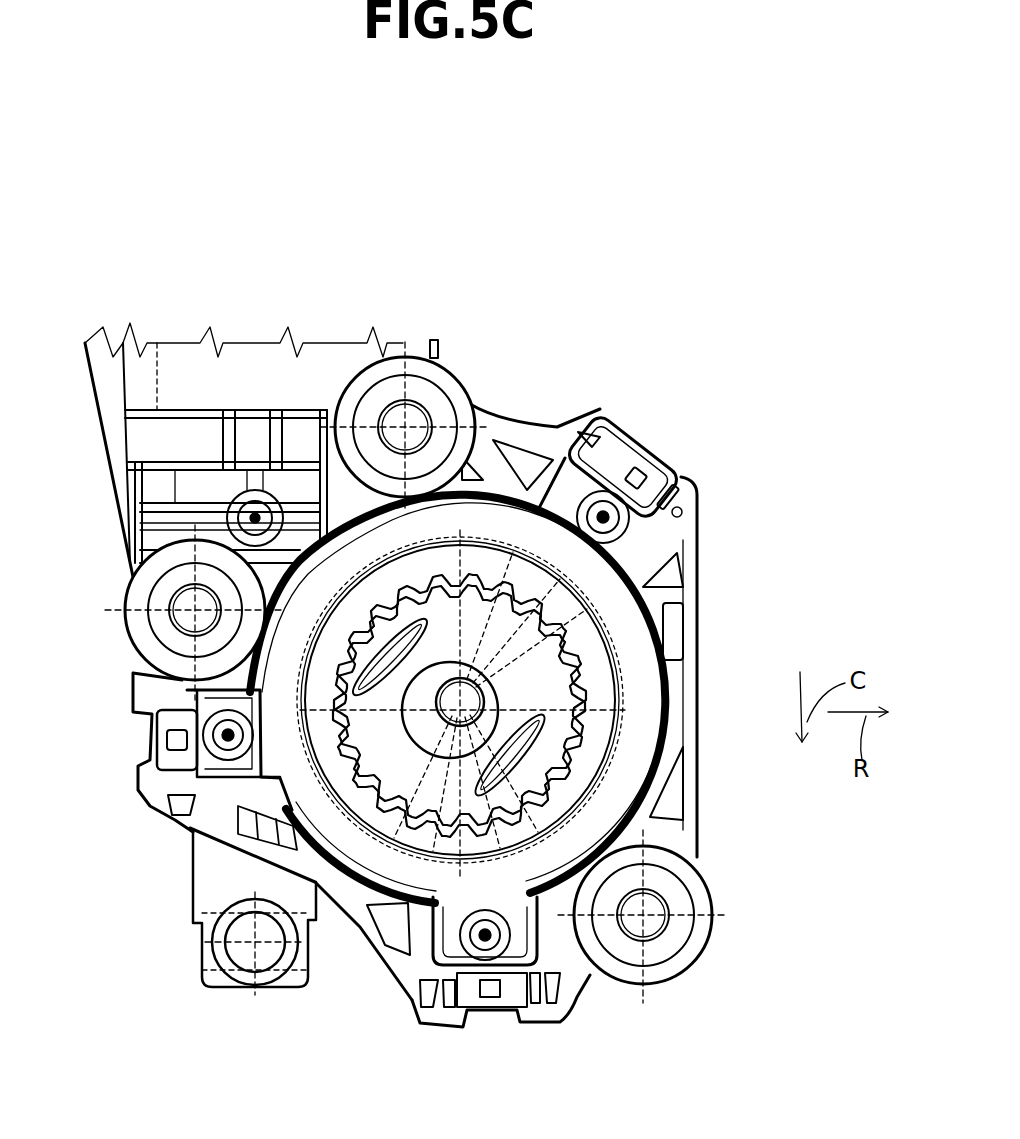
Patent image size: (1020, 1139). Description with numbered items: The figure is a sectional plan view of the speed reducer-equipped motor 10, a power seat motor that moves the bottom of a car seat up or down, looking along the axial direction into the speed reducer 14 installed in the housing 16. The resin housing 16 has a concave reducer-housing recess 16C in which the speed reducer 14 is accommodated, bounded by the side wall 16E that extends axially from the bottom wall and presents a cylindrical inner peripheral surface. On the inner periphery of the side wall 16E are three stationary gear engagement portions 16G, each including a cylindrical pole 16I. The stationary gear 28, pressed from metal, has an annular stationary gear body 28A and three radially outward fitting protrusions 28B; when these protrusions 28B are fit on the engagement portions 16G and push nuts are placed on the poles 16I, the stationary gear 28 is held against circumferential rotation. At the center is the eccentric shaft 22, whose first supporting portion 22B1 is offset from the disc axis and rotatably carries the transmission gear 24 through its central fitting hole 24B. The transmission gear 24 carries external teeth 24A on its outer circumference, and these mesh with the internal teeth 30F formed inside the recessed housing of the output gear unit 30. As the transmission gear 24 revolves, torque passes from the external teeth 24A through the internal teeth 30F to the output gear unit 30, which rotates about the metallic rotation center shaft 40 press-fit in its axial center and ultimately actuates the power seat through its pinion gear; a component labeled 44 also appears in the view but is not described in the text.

The speed reducer-equipped motor 10 is at (522, 168).
The speed reducer 14 is at (227, 823).
The housing 16 is at (484, 398).
The reducer-housing recess 16C is at (688, 672).
The side wall 16E is at (688, 765).
The stationary gear engagement portions 16G is at (666, 553).
The cylindrical pole 16I is at (655, 462).
The eccentric shaft 22 is at (396, 892).
The first supporting portion 22B1 is at (443, 737).
The transmission gear 24 is at (243, 780).
The external teeth 24A is at (492, 580).
The fitting hole 24B is at (452, 752).
The stationary gear 28 is at (222, 700).
The stationary gear body 28A is at (306, 480).
The fitting protrusions 28B is at (600, 443).
The output gear unit 30 is at (538, 815).
The internal teeth 30F is at (612, 640).
The rotation center shaft 40 is at (268, 600).
The hole 44 is at (700, 505).